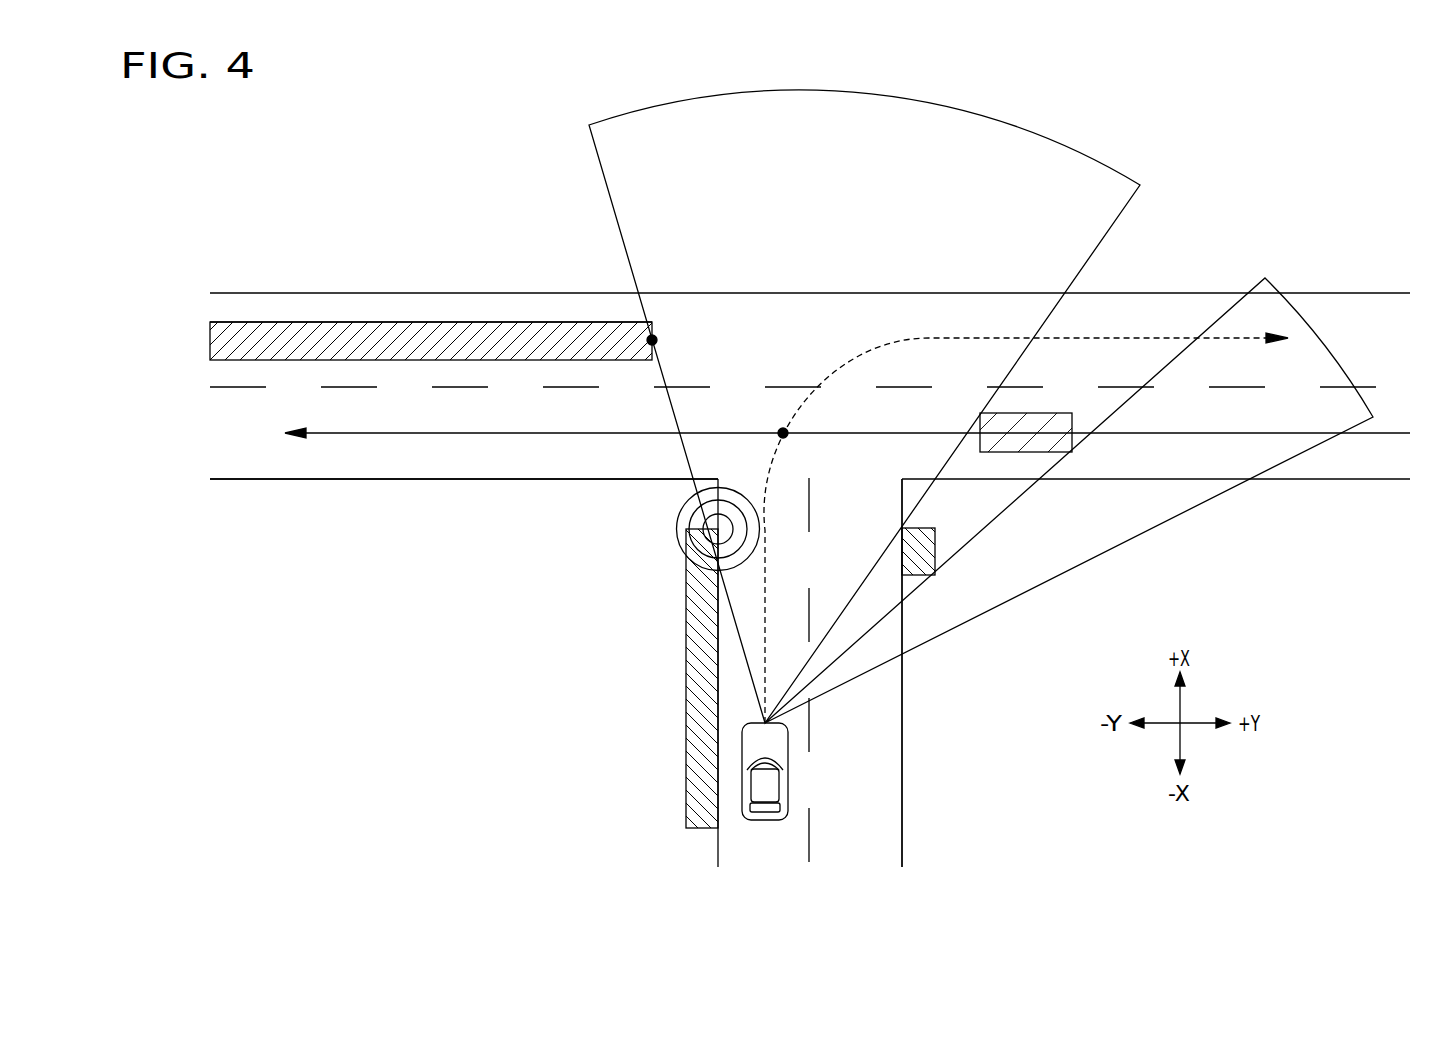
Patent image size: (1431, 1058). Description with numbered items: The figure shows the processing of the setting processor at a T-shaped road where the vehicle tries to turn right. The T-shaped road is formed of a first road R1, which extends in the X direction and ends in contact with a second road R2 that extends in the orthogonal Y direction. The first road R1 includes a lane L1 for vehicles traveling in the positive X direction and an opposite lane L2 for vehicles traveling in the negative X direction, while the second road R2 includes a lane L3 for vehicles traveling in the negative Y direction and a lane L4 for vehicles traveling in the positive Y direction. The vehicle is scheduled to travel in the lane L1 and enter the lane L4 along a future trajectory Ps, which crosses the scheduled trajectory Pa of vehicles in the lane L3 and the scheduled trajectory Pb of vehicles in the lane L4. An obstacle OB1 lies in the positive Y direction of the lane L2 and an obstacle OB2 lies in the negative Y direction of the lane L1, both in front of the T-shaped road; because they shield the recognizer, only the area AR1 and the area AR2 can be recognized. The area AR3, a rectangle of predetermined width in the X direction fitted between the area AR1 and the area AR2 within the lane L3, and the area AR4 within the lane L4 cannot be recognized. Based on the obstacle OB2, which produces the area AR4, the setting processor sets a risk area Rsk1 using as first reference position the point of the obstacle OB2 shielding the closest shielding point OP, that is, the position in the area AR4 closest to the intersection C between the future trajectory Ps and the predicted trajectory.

The second road R2 is at (166, 295).
The lane L4 is at (199, 355).
The lane L3 is at (199, 448).
The area AR4 is at (431, 341).
The scheduled trajectory Pb is at (372, 322).
The scheduled trajectory Pa is at (372, 479).
The closest shielding point OP is at (656, 336).
The future trajectory Ps is at (978, 338).
The intersection C is at (783, 433).
The area AR2 is at (1063, 142).
The area AR1 is at (1337, 358).
The area AR3 is at (1026, 432).
The risk area Rsk1 is at (676, 529).
The obstacle OB2 is at (686, 674).
The obstacle OB1 is at (912, 528).
The first road R1 is at (902, 877).
The lane L1 is at (779, 865).
The lane L2 is at (869, 865).